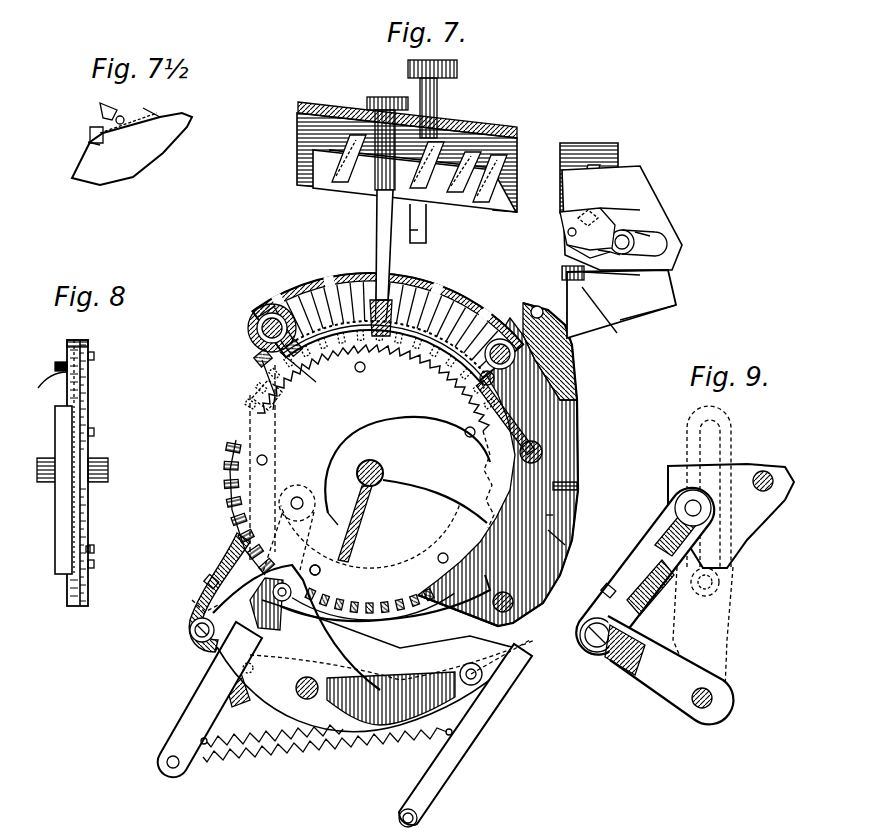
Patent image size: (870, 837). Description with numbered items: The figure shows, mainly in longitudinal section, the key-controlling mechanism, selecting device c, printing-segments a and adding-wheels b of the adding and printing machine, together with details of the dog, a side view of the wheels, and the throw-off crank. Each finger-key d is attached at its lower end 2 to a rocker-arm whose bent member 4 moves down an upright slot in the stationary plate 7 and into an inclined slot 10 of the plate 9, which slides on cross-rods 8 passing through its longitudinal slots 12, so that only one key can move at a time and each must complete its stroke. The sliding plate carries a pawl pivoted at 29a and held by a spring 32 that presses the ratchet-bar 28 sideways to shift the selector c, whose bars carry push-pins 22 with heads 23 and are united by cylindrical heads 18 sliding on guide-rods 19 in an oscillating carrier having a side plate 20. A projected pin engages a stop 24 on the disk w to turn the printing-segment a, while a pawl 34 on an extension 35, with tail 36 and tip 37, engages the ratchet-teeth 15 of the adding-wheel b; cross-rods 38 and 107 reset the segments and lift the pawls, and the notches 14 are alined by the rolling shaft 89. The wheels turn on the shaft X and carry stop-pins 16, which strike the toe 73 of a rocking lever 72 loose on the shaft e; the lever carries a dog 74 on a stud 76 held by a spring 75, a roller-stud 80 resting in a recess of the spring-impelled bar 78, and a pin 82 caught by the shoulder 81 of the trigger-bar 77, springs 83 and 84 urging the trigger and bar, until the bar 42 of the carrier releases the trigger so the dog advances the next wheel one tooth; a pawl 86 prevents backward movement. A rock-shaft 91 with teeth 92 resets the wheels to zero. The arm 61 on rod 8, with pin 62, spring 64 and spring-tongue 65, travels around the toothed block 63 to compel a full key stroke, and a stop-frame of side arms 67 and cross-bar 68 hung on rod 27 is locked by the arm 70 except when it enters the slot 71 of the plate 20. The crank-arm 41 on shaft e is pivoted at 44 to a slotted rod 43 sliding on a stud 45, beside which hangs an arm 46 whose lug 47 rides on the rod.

In FIG. 7, the printing-segment a is at (232, 477).
In FIG. 8, the printing-segment a is at (55, 431).
In FIG. 7, the finger-key d is at (440, 100).
In FIG. 7, the stationary slotted plate 7 is at (297, 164).
In FIG. 7, the lower end of finger-key 2 is at (370, 160).
In FIG. 7, the slide-plate with inclined slots 9 is at (335, 190).
In FIG. 7, the inclined slots 10 is at (462, 180).
In FIG. 7, the downwardly-bent member 4 is at (376, 245).
In FIG. 7, the push-pins 22 is at (322, 288).
In FIG. 7, the projecting heads 23 is at (290, 298).
In FIG. 7, the selecting device c is at (262, 300).
In FIG. 7, the cylindrical heads 18 is at (248, 320).
In FIG. 7, the guide-rods 19 is at (262, 332).
In FIG. 7, the cross-rod 107 is at (262, 362).
In FIG. 7, the projecting tips 37 is at (258, 362).
The projecting tips 37 is at (103, 110).
In FIG. 7, the pawl 34 is at (254, 394).
The pawl 34 is at (90, 130).
In FIG. 8, the pawl 34 is at (67, 342).
In FIG. 7, the cross-rod 38 is at (300, 352).
In FIG. 7, the ear or extension 35 is at (305, 375).
The ear or extension 35 is at (148, 110).
The tail of dog 36 is at (90, 143).
In FIG. 8, the tail of dog 36 is at (35, 388).
In FIG. 7, the stop-pin 16 is at (365, 372).
In FIG. 8, the stop-pin 16 is at (94, 356).
In FIG. 7, the stop 24 is at (472, 380).
In FIG. 8, the stop 24 is at (55, 365).
In FIG. 7, the rolling shaft 89 is at (494, 380).
In FIG. 7, the arm 70 is at (578, 400).
In FIG. 7, the teeth 92 is at (538, 445).
In FIG. 7, the rock-shaft 91 is at (543, 455).
In FIG. 7, the open slot 71 is at (578, 487).
In FIG. 7, the teeth or notches 14 is at (566, 545).
In FIG. 7, the side plate 20 is at (510, 597).
In FIG. 9, the side plate 20 is at (668, 470).
In FIG. 7, the bar 42 is at (485, 620).
In FIG. 7, the rocking lever 72 is at (413, 672).
In FIG. 7, the roller-stud 80 is at (483, 678).
In FIG. 7, the spring-impelled bar 78 is at (470, 722).
In FIG. 7, the coiled spring 84 is at (322, 750).
In FIG. 7, the coiled spring 83 is at (243, 737).
In FIG. 7, the trigger-bar 77 is at (175, 729).
In FIG. 7, the square shoulder or notch 81 is at (222, 672).
In FIG. 7, the spring-held pawl 86 is at (280, 690).
In FIG. 7, the fixed pin 82 is at (254, 666).
In FIG. 7, the principal shaft e is at (296, 688).
In FIG. 9, the principal shaft e is at (714, 698).
In FIG. 7, the stud 76 is at (284, 604).
In FIG. 7, the spring 75 is at (318, 615).
In FIG. 7, the dog 74 is at (383, 618).
In FIG. 7, the toe 73 is at (308, 561).
In FIG. 7, the crank-arm 41 is at (225, 655).
In FIG. 9, the crank-arm 41 is at (612, 655).
In FIG. 7, the pivot 44 is at (190, 634).
In FIG. 9, the pivot 44 is at (585, 624).
In FIG. 7, the slotted connecting-rod 43 is at (194, 601).
In FIG. 9, the slotted connecting-rod 43 is at (692, 585).
In FIG. 7, the lug 47 is at (207, 580).
In FIG. 9, the lug 47 is at (605, 586).
In FIG. 7, the swinging arm 46 is at (230, 562).
In FIG. 9, the swinging arm 46 is at (676, 598).
In FIG. 7, the ratchet-teeth 15 is at (235, 500).
In FIG. 8, the ratchet-teeth 15 is at (92, 549).
In FIG. 7, the adding-wheel b is at (240, 440).
In FIG. 8, the adding-wheel b is at (80, 510).
In FIG. 7, the common stationary shaft X is at (381, 470).
In FIG. 8, the common stationary shaft X is at (100, 480).
In FIG. 9, the common stationary shaft X is at (768, 471).
In FIG. 7, the stud 45 is at (297, 497).
In FIG. 9, the stud 45 is at (675, 506).
In FIG. 7, the disk w is at (542, 515).
The disk w is at (132, 149).
In FIG. 8, the disk w is at (67, 394).
In FIG. 7, the toothed block 63 is at (594, 212).
In FIG. 7, the spring-tongue 65 is at (640, 210).
In FIG. 7, the spring 64 is at (640, 233).
In FIG. 7, the longitudinal slots 12 is at (662, 245).
In FIG. 7, the pin 62 is at (566, 232).
In FIG. 7, the arm 61 is at (568, 247).
In FIG. 7, the stationary cross-rods 8 is at (610, 246).
In FIG. 7, the spring 32 is at (566, 280).
In FIG. 7, the ratchet-bar 28 is at (625, 278).
In FIG. 7, the cross-bar 68 is at (678, 292).
In FIG. 7, the fixed rod 27 is at (544, 313).
In FIG. 7, the side arms 67 is at (608, 326).
In FIG. 7, the pawl pivot 29a is at (648, 328).